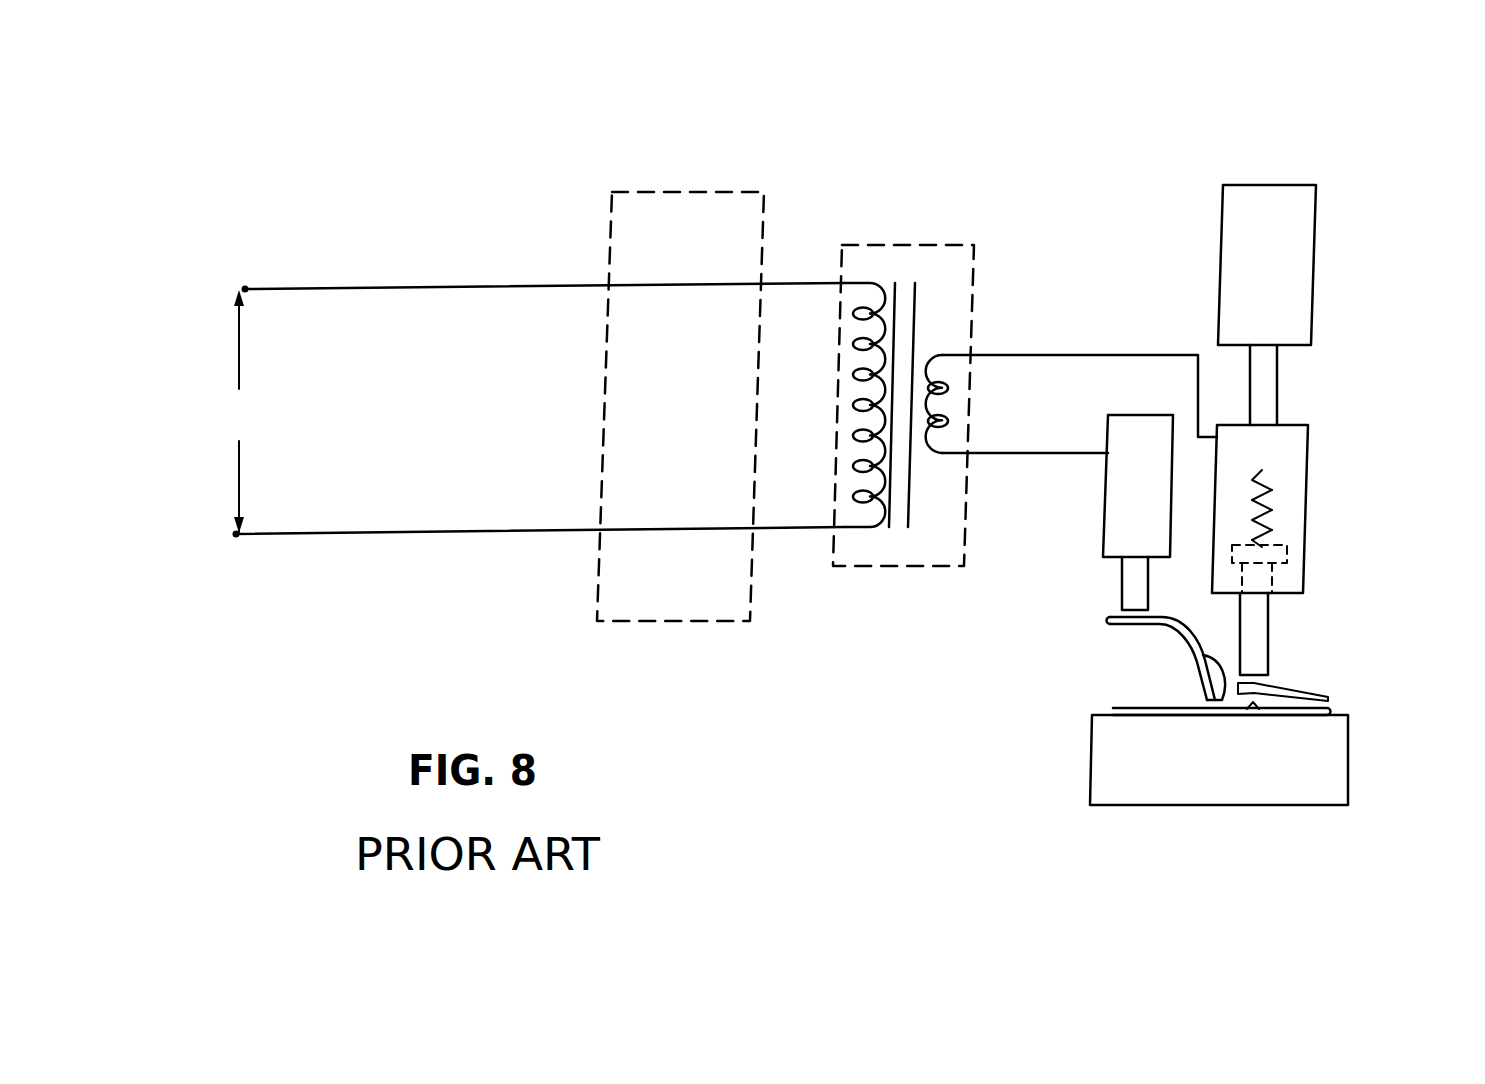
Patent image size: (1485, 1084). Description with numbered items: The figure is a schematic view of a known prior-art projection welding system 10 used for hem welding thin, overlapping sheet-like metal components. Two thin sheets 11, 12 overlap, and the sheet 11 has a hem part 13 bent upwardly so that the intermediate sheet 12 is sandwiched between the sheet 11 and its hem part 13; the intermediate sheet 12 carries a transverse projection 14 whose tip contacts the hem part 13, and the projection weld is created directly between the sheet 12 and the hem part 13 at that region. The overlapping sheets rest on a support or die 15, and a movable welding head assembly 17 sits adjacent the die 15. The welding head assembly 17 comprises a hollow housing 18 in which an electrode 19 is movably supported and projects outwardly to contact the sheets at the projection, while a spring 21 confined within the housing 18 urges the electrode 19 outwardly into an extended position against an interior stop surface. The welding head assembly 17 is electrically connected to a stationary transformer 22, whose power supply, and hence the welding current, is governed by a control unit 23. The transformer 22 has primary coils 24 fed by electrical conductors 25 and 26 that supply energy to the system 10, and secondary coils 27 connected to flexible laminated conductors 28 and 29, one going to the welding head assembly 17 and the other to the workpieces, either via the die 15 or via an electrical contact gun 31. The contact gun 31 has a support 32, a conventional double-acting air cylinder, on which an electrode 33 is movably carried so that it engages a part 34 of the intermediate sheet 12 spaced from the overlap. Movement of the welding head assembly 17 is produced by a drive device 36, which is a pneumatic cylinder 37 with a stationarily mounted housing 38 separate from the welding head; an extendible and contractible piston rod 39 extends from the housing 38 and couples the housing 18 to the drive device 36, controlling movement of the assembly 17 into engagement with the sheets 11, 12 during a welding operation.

The projection welding system 10 is at (947, 120).
The sheet 11 is at (1130, 708).
The intermediate sheet 12 is at (1205, 656).
The hem part 13 is at (1312, 700).
The projection 14 is at (1262, 688).
The die 15 is at (1322, 797).
The welding head assembly 17 is at (1318, 498).
The housing 18 is at (1288, 458).
The electrode 19 is at (1264, 610).
The spring 21 is at (1262, 525).
The transformer 22 is at (877, 258).
The control unit 23 is at (652, 192).
The primary coils 24 is at (869, 530).
The electrical conductor 25 is at (300, 288).
The electrical conductor 26 is at (290, 536).
The secondary coils 27 is at (945, 372).
The electrical conductor 28 is at (1093, 355).
The electrical conductor 29 is at (1015, 456).
The electrical contact gun 31 is at (1085, 527).
The support 32 is at (1122, 482).
The electrode 33 is at (1130, 571).
The part of intermediate sheet 34 is at (1125, 628).
The drive device 36 is at (1364, 264).
The pneumatic cylinder 37 is at (1216, 223).
The housing 38 is at (1258, 202).
The piston rod 39 is at (1272, 378).